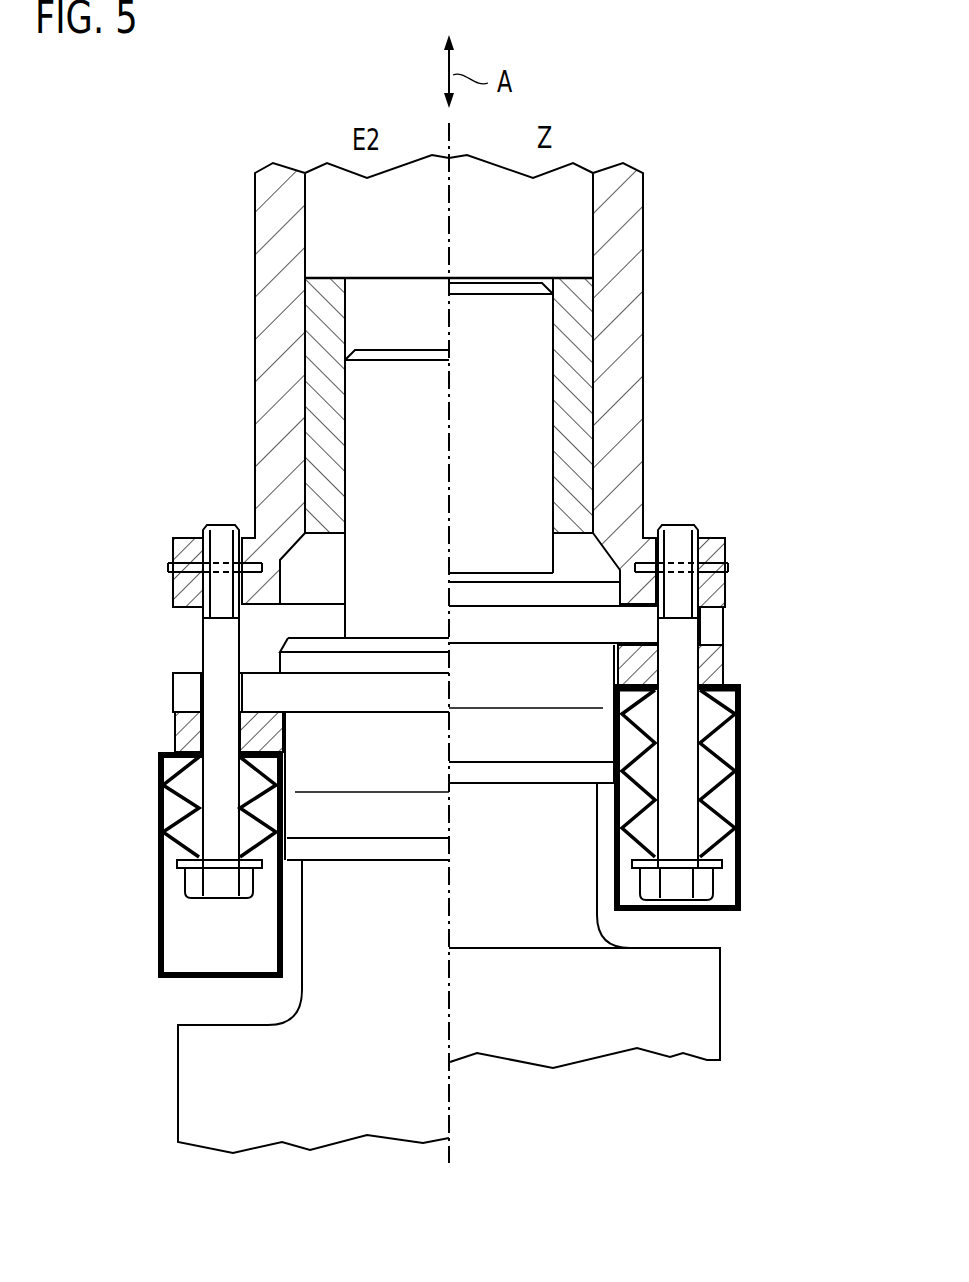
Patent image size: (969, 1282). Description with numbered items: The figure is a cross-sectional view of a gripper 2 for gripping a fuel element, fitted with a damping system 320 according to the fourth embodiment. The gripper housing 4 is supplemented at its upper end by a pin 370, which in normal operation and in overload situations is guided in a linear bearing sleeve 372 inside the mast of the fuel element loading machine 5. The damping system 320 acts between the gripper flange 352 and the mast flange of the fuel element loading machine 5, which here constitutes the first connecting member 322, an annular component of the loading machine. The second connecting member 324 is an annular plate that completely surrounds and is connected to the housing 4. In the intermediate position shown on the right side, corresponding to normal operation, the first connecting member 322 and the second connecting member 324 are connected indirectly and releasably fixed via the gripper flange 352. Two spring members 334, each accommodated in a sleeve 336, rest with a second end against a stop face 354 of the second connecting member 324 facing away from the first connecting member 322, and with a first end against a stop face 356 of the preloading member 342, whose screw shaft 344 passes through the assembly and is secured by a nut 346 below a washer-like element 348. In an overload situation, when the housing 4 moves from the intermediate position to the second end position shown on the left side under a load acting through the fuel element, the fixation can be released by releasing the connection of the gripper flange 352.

The gripper 2 is at (744, 178).
The gripper housing 4 is at (707, 998).
The fuel element loading machine 5 is at (630, 247).
The damping system 320 is at (125, 556).
The first connecting member 322 is at (184, 587).
The second connecting member 324 is at (184, 723).
The spring member 334 is at (184, 827).
The sleeve 336 is at (158, 902).
The preloading member 342 is at (206, 657).
The screw shaft 344 is at (200, 530).
The lower nut 346 is at (222, 887).
The flange 348 is at (202, 687).
The gripper flange 352 is at (713, 625).
The stop face of second connecting member 354 is at (193, 755).
The stop face of preloading member 356 is at (184, 855).
The pin 370 is at (538, 312).
The linear bearing sleeve 372 is at (580, 382).